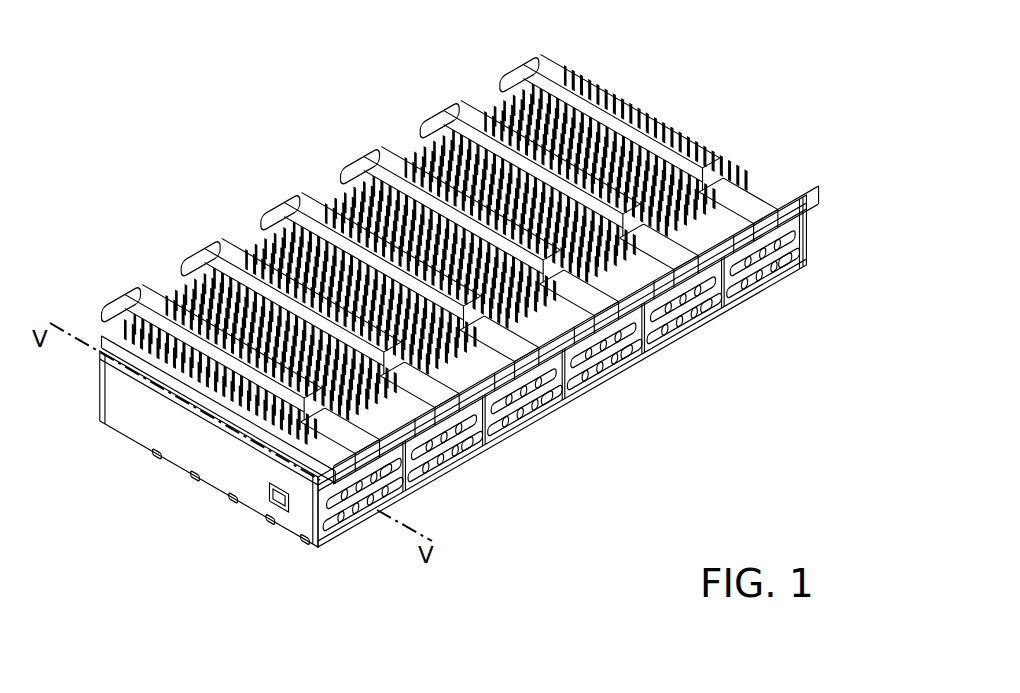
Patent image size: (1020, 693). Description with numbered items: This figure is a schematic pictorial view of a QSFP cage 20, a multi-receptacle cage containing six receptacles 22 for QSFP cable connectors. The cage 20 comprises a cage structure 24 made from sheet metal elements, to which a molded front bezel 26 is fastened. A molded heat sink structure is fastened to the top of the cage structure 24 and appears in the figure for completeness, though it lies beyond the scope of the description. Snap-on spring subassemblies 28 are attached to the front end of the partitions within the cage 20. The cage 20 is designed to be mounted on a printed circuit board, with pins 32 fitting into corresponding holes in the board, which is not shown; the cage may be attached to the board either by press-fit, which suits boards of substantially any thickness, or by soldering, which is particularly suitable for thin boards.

The QSFP cage 20 is at (213, 148).
The receptacles 22 is at (735, 267).
The cage structure 24 is at (130, 410).
The molded front bezel 26 is at (307, 540).
The snap-on spring subassemblies 28 is at (470, 427).
The pins 32 is at (157, 450).